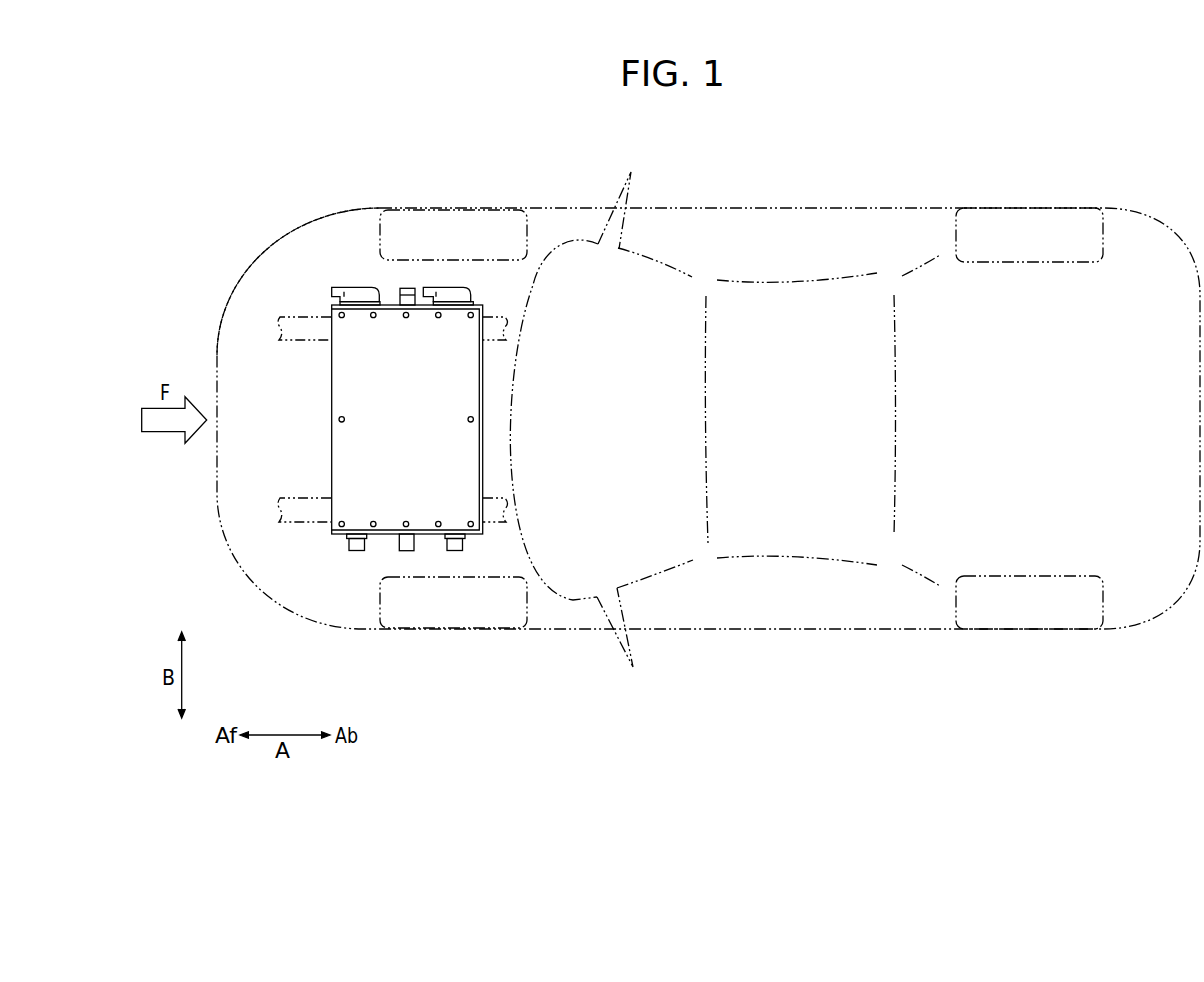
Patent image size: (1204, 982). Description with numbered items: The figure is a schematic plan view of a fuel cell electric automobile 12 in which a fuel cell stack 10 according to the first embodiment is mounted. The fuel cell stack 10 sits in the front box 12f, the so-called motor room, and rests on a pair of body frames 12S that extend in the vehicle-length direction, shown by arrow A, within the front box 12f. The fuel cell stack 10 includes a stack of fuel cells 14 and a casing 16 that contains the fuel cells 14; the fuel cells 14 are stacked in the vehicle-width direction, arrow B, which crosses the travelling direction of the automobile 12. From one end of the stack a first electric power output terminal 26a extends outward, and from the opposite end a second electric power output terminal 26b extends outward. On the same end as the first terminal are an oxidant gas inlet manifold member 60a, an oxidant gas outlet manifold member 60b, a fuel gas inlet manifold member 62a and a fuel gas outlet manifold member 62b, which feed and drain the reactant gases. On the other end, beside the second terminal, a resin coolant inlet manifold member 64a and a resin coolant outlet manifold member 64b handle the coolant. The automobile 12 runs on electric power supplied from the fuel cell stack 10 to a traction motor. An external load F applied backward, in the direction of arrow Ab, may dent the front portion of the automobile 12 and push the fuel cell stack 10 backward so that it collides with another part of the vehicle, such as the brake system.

The fuel cell stack 10 is at (447, 423).
The fuel cell electric automobile 12 is at (710, 206).
The front box 12f is at (296, 250).
The body frames 12S is at (300, 324).
The fuel cells 14 is at (481, 409).
The casing 16 is at (464, 419).
The first electric power output terminal 26a is at (407, 548).
The second electric power output terminal 26b is at (409, 290).
The oxidant gas inlet manifold member 60a is at (450, 606).
The oxidant gas outlet manifold member 60b is at (355, 548).
The fuel gas inlet manifold member 62a is at (456, 548).
The fuel gas outlet manifold member 62b is at (337, 563).
The coolant inlet manifold member 64a is at (452, 289).
The coolant outlet manifold member 64b is at (356, 286).